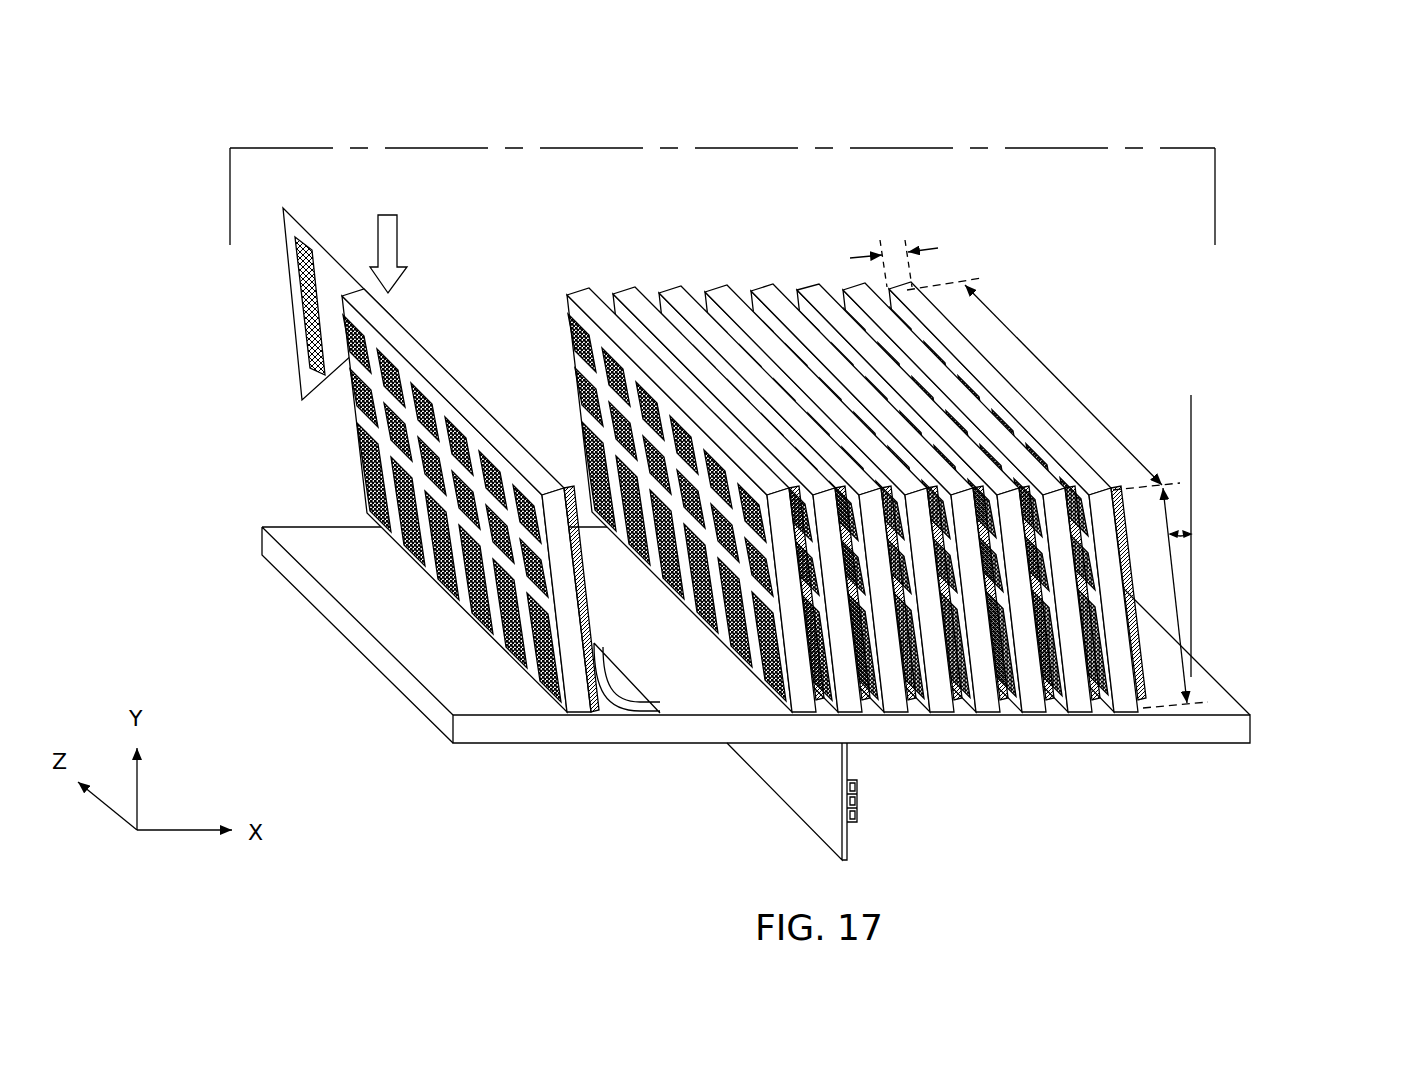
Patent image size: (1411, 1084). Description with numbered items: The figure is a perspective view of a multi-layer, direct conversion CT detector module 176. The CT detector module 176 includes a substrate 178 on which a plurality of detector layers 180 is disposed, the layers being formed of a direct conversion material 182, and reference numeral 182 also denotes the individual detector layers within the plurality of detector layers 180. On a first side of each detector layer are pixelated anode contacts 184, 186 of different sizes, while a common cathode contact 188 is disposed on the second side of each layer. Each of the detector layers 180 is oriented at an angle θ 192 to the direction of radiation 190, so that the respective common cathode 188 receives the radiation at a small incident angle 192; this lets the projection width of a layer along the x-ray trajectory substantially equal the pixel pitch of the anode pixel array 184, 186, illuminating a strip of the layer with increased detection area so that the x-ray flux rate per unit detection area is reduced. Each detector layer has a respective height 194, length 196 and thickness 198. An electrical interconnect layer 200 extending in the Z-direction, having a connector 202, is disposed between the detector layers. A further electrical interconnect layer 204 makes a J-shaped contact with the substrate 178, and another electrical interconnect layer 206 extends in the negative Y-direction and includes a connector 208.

The CT detector module 176 is at (804, 486).
The substrate 178 is at (318, 598).
The plurality of detector layers 180 is at (476, 148).
The direct conversion material 182 is at (691, 543).
The pixelated anode contacts 184 is at (365, 407).
The pixelated anode contacts 186 is at (401, 500).
The common cathode contact 188 is at (575, 492).
The direction of radiation 190 is at (398, 228).
The angle θ 192 is at (1190, 522).
The height 194 is at (1180, 608).
The length 196 is at (1068, 390).
The thickness 198 is at (895, 253).
The electrical interconnect layer 200 is at (306, 290).
The connector 202 is at (299, 311).
The electrical interconnect layer 204 is at (638, 716).
The electrical interconnect layer 206 is at (807, 793).
The connector 208 is at (858, 810).